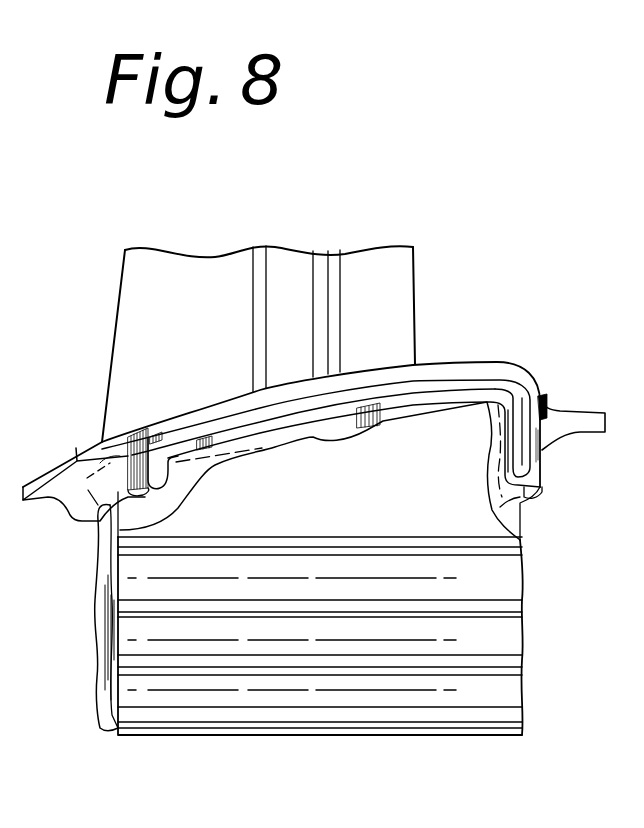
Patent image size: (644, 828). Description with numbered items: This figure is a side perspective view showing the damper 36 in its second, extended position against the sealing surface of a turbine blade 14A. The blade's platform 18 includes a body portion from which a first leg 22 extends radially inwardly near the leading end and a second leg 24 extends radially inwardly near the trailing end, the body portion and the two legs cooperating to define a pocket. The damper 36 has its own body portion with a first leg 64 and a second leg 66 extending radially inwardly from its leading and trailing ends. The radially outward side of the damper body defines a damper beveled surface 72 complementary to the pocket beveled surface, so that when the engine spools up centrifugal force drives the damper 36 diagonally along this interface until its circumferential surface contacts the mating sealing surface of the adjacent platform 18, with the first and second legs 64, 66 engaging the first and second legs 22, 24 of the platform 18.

The turbine blade 14A is at (70, 412).
The second leg 66 is at (157, 477).
The second leg 24 is at (128, 490).
The damper 36 is at (398, 405).
The platform 18 is at (458, 371).
The damper beveled surface 72 is at (498, 381).
The first leg 64 is at (527, 460).
The first leg 22 is at (530, 480).